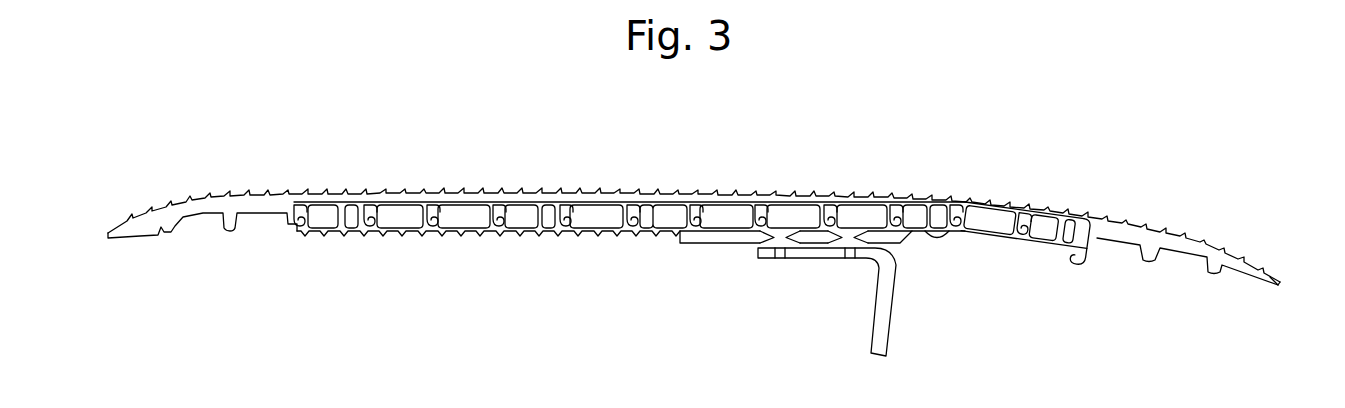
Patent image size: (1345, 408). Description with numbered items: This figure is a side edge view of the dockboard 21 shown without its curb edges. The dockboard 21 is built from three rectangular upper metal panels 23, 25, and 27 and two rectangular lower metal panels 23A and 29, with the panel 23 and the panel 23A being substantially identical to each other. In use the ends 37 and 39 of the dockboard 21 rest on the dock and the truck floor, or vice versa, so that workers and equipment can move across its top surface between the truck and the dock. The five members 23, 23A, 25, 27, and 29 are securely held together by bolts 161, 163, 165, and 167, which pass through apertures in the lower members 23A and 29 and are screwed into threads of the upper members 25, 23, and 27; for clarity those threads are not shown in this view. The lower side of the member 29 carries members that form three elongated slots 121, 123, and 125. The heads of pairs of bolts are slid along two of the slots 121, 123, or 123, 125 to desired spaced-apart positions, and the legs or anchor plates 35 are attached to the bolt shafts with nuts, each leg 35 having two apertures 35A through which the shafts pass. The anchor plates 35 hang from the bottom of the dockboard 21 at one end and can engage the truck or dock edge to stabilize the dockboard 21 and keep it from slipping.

The dockboard 21 is at (317, 246).
The upper metal panel 23 is at (730, 194).
The lower metal panel 23A is at (462, 238).
The upper metal panel 25 is at (384, 193).
The upper metal panel 27 is at (1158, 229).
The lower metal panel 29 is at (1003, 240).
The leg or anchor plate 35 is at (895, 322).
The aperture 35A is at (850, 259).
The end of dockboard 37 is at (128, 241).
The end of dockboard 39 is at (1282, 286).
The elongated slot 121 is at (718, 245).
The elongated slot 123 is at (782, 231).
The elongated slot 125 is at (848, 231).
The bolt 161 is at (362, 240).
The bolt 163 is at (547, 238).
The bolt 165 is at (942, 236).
The bolt 167 is at (1077, 250).